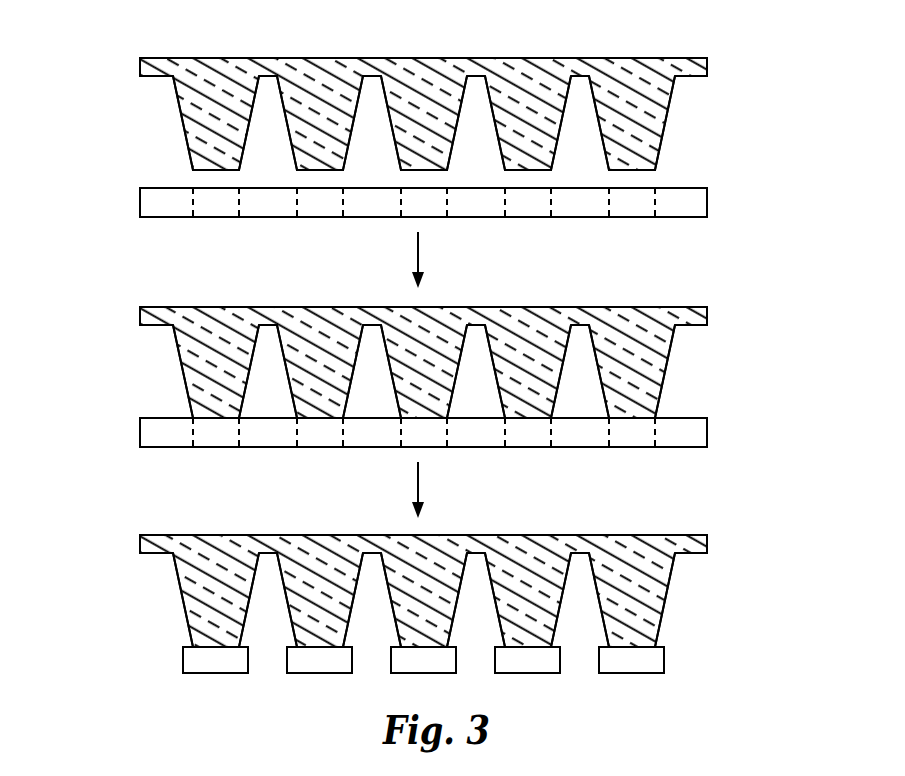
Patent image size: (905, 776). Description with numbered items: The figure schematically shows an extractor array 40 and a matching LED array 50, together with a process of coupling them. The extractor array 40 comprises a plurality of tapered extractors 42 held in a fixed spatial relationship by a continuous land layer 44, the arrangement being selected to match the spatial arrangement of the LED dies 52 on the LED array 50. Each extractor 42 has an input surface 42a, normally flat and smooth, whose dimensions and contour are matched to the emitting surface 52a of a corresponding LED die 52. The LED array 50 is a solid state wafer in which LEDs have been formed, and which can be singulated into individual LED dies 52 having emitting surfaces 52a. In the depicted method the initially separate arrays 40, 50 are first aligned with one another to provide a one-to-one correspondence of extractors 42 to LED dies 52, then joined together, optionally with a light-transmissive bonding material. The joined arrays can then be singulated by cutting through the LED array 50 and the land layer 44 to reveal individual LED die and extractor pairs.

The extractor array 40 is at (118, 99).
The extractors 42 is at (527, 110).
The input surface 42a is at (317, 172).
The land layer 44 is at (715, 58).
The LED array 50 is at (111, 203).
The LED dies 52 is at (320, 207).
The emitting surfaces 52a is at (631, 188).